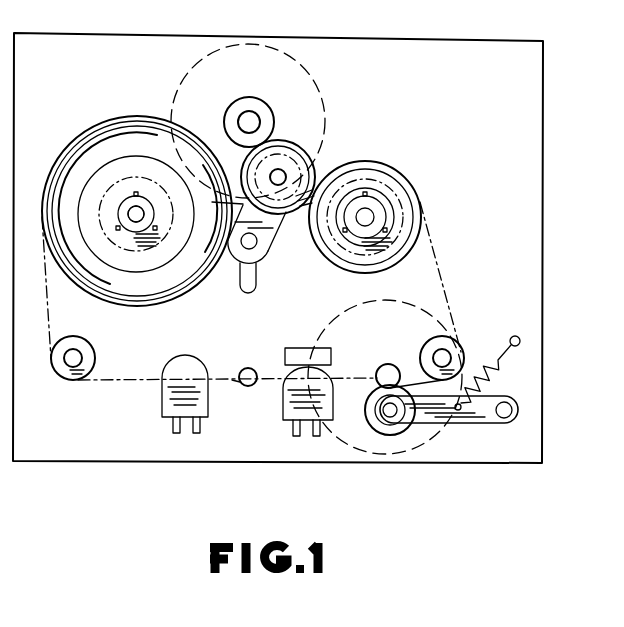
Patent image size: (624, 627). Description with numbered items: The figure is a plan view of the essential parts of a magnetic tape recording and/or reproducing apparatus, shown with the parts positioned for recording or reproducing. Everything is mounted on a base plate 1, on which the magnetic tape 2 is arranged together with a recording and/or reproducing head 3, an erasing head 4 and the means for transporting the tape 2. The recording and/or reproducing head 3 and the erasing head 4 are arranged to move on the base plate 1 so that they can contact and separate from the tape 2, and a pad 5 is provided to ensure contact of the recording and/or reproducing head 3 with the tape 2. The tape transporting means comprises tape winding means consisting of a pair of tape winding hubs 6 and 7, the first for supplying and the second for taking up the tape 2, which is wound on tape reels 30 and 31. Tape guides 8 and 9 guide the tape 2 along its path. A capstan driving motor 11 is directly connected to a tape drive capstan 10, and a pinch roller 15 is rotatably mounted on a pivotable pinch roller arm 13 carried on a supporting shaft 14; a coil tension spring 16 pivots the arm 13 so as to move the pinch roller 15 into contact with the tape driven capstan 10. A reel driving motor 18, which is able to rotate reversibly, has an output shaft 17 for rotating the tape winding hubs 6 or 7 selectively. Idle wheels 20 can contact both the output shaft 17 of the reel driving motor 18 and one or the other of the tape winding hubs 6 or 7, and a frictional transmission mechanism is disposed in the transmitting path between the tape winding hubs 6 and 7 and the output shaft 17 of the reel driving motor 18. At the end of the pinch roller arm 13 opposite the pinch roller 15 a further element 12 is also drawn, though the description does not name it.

The base plate 1 is at (528, 202).
The magnetic tape 2 is at (52, 172).
The recording and/or reproducing head 3 is at (292, 395).
The erasing head 4 is at (165, 397).
The pad 5 is at (290, 352).
The tape winding hub 6 is at (147, 238).
The tape winding hub 7 is at (385, 208).
The tape guide 8 is at (65, 378).
The tape guide 9 is at (430, 346).
The tape drive capstan 10 is at (386, 365).
The capstan driving motor 11 is at (318, 322).
The lever end pin 12 is at (504, 419).
The pinch roller arm 13 is at (461, 413).
The supporting shaft 14 is at (392, 420).
The pinch roller 15 is at (383, 431).
The coil tension spring 16 is at (520, 355).
The output shaft 17 is at (242, 97).
The reel driving motor 18 is at (302, 68).
The idle wheels 20 is at (295, 150).
The tape reel 30 is at (135, 250).
The tape reel 31 is at (370, 180).